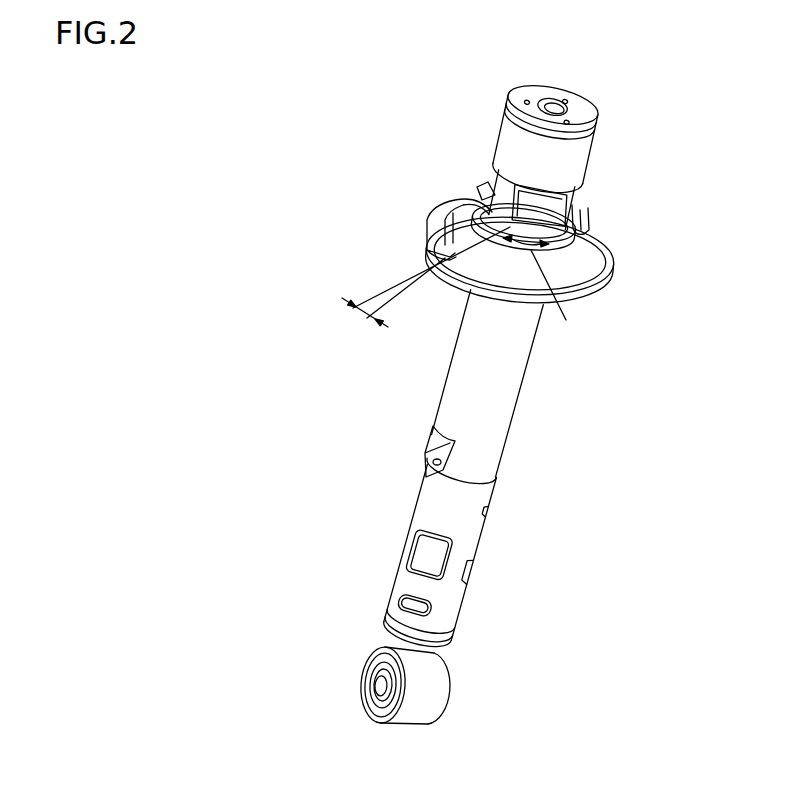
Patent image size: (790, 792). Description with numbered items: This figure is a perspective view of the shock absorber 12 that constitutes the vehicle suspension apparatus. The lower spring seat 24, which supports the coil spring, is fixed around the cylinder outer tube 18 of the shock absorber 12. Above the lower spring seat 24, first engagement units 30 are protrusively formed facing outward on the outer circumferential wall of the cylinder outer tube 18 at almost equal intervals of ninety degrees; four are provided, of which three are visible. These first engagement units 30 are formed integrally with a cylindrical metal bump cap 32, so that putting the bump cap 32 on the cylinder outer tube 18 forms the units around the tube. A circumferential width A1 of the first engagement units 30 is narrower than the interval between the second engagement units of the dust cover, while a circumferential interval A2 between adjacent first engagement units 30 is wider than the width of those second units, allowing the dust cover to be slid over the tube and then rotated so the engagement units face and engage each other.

The shock absorber 12 is at (390, 556).
The cylinder outer tube 18 is at (493, 421).
The lower spring seat 24 is at (604, 262).
The first engagement units 30 is at (484, 188).
The bump cap 32 is at (578, 156).
The circumferential width of the first engagement units A1 is at (409, 277).
The circumferential interval of the first engagement units A2 is at (554, 299).